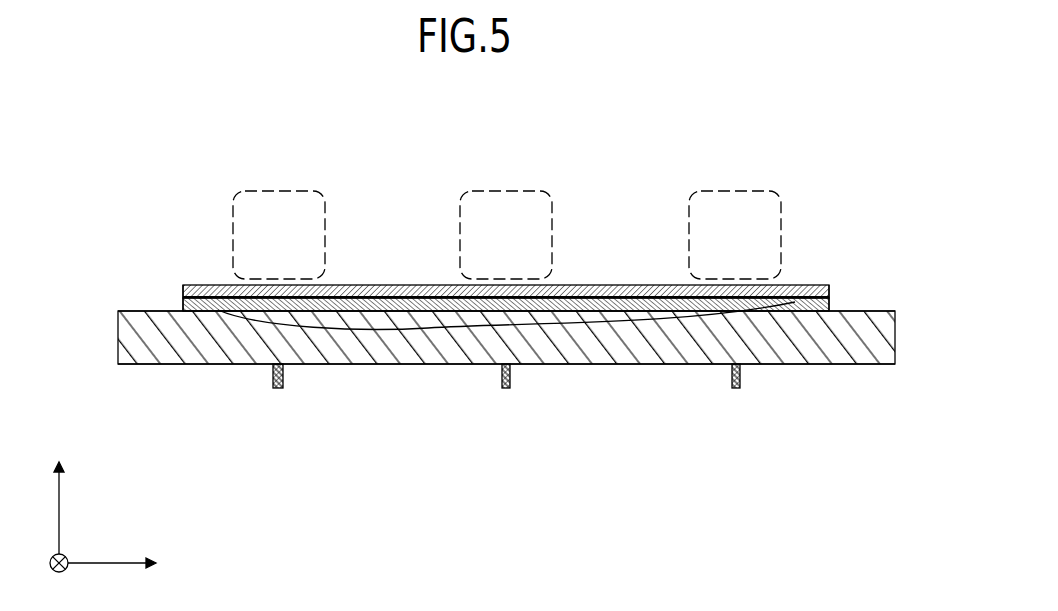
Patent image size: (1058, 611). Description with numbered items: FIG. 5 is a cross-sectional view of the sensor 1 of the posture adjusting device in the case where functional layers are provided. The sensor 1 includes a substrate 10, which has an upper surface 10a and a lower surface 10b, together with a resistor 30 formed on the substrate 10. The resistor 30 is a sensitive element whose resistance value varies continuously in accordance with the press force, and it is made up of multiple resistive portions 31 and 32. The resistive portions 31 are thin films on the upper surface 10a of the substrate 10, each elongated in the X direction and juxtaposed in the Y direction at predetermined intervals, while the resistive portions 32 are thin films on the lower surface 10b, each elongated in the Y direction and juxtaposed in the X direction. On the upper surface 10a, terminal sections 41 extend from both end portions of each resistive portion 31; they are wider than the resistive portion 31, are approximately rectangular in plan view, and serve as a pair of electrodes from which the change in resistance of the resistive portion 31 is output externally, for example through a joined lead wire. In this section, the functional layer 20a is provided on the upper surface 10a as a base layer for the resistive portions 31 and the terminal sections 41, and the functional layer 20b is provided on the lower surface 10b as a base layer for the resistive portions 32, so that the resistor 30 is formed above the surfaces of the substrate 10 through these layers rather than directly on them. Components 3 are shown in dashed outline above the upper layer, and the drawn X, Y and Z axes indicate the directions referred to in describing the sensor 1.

The sensor 1 is at (59, 133).
The electronic component 3 is at (731, 191).
The substrate 10 is at (137, 337).
The upper surface 10a is at (137, 310).
The lower surface 10b is at (137, 364).
The functional layer 20a is at (822, 303).
The functional layer 20b is at (740, 372).
The resistor 30 is at (506, 398).
The resistive portion 31 is at (428, 328).
The resistive portion 32 is at (509, 404).
The terminal section 41 is at (220, 281).